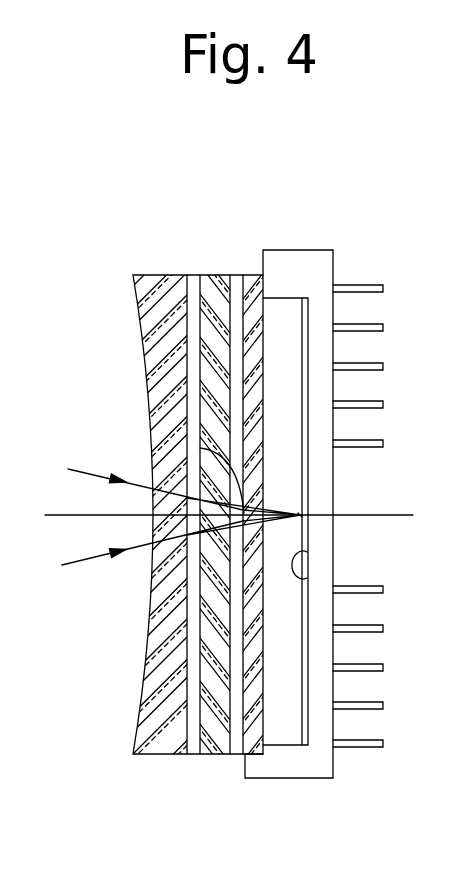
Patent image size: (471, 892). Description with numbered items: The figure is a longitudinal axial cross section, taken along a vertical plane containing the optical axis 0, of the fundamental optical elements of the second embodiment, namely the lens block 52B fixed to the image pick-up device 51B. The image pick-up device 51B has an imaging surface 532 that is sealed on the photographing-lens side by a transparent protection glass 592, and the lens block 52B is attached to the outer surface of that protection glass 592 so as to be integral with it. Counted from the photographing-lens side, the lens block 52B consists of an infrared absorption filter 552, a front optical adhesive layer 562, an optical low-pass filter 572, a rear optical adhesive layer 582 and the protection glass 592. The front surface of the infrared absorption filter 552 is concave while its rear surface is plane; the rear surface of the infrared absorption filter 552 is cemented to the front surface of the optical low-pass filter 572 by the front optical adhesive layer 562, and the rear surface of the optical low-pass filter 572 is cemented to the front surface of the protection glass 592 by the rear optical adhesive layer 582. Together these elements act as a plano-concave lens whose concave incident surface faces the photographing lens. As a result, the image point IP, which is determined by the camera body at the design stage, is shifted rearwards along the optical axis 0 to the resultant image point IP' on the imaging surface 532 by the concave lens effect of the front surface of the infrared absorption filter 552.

The lens block 52B is at (260, 186).
The infrared absorption filter 552 is at (143, 283).
The front optical adhesive layer 562 is at (192, 730).
The optical low-pass filter 572 is at (210, 283).
The rear optical adhesive layer 582 is at (238, 748).
The protection glass 592 is at (257, 277).
The image pick-up device 51B is at (315, 267).
The imaging surface 532 is at (307, 552).
The optical axis 0 is at (242, 517).
The image point IP is at (161, 459).
The resultant image point IP' is at (349, 491).